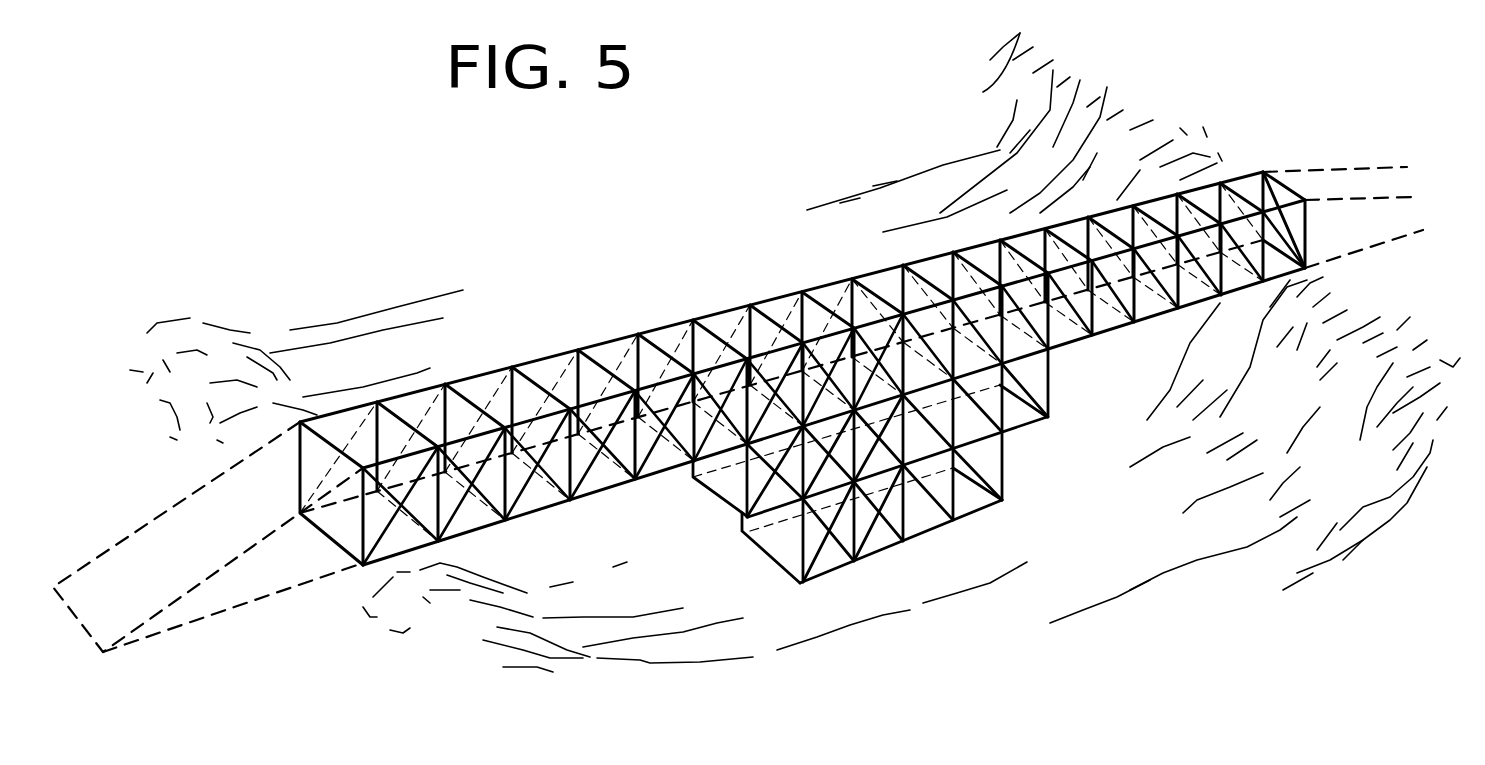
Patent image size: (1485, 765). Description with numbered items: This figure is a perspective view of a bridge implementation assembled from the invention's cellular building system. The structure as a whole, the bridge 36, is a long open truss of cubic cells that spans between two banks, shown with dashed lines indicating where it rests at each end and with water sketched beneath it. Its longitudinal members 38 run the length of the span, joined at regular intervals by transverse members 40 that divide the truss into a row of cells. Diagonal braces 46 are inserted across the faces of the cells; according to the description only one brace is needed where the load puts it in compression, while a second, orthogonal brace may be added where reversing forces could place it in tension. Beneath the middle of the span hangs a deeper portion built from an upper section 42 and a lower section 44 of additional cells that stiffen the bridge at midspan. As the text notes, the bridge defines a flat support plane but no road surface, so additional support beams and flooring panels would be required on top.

The truss structure 36 is at (687, 487).
The longitudinal chord member 38 is at (483, 388).
The transverse members 40 is at (720, 320).
The upper extension section 42 is at (1050, 388).
The lower extension section 44 is at (1003, 460).
The diagonal brace members 46 is at (432, 480).